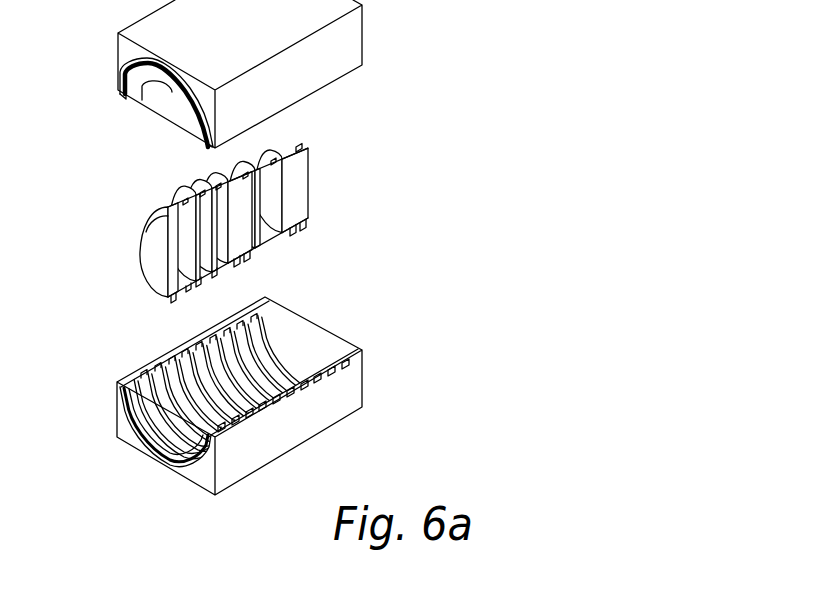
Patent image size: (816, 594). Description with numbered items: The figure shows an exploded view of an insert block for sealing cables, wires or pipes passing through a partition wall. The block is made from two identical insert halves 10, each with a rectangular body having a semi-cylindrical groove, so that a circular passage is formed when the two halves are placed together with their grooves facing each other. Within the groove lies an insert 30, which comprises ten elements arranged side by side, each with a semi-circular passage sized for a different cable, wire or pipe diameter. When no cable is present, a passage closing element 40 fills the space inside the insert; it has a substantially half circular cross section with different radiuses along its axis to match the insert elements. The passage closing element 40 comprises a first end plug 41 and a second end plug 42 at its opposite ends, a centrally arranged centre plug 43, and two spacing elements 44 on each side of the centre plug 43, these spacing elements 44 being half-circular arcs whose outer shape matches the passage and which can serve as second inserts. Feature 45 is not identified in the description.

The insert half 10 is at (356, 405).
The insert 30 is at (300, 332).
The passage closing element 40 is at (318, 166).
The first end plug 41 is at (143, 250).
The second end plug 42 is at (297, 205).
The centre plug 43 is at (254, 292).
The spacing element 44 is at (190, 174).
The top tab 45 is at (300, 148).